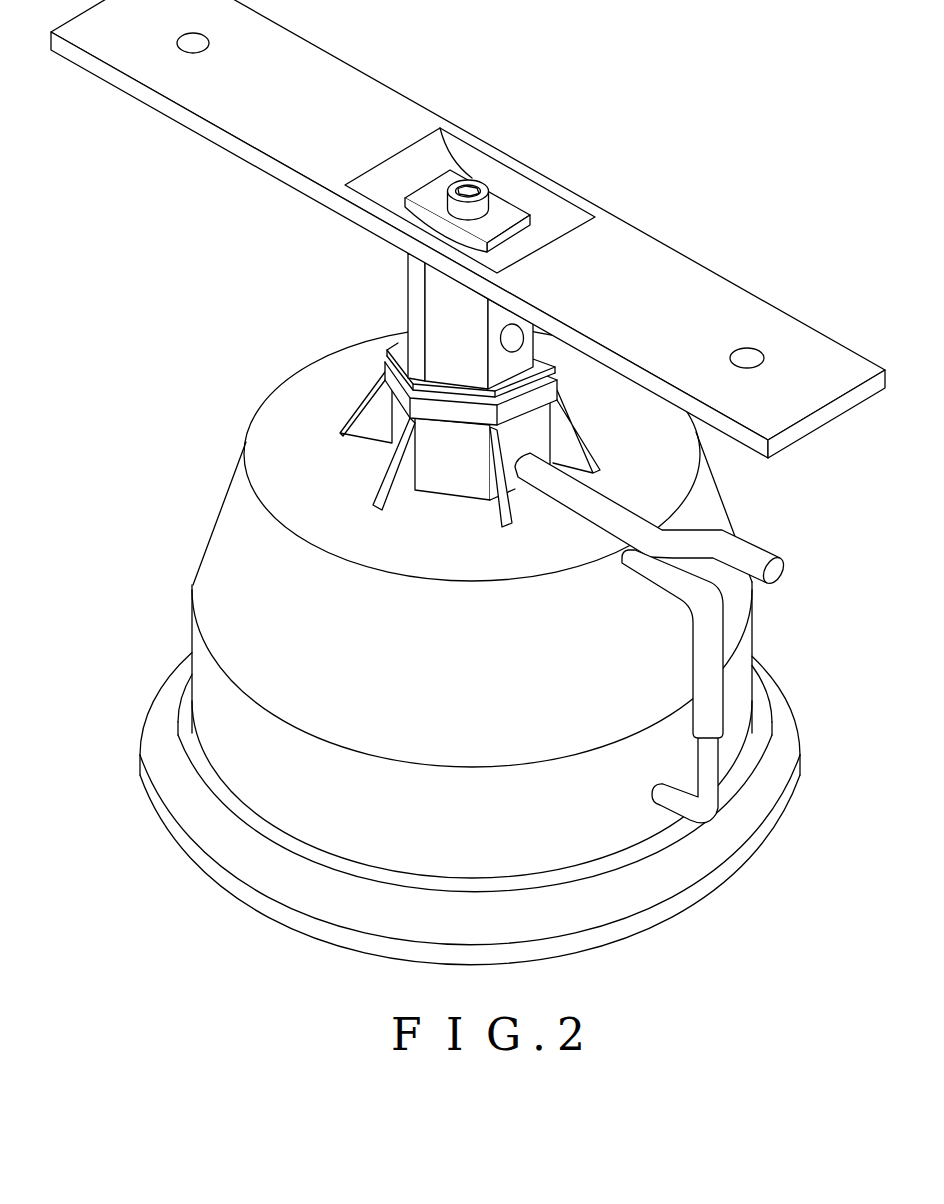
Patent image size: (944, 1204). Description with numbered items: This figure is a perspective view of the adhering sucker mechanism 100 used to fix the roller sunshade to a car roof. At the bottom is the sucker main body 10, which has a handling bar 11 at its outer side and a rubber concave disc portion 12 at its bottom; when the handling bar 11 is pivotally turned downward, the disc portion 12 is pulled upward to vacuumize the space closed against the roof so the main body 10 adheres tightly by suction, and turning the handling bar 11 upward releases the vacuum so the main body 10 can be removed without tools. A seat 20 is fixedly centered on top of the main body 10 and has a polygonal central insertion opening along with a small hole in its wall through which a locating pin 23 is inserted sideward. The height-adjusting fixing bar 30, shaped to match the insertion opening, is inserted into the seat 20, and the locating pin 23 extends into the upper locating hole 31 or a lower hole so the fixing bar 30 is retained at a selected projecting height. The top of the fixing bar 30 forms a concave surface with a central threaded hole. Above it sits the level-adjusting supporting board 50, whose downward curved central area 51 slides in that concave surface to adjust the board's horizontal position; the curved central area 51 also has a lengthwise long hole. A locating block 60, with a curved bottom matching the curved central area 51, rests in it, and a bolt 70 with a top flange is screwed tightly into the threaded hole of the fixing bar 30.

The sucker main body 10 is at (207, 590).
The handling bar 11 is at (703, 640).
The rubber concave disc portion 12 is at (703, 868).
The seat 20 is at (445, 472).
The locating pin 23 is at (745, 550).
The height-adjusting fixing bar 30 is at (417, 298).
The upper locating hole 31 is at (500, 339).
The level-adjusting supporting board 50 is at (337, 77).
The downward curved central area 51 is at (515, 252).
The locating block 60 is at (503, 210).
The bolt 70 is at (445, 198).
The adhering sucker mechanism 100 is at (246, 391).